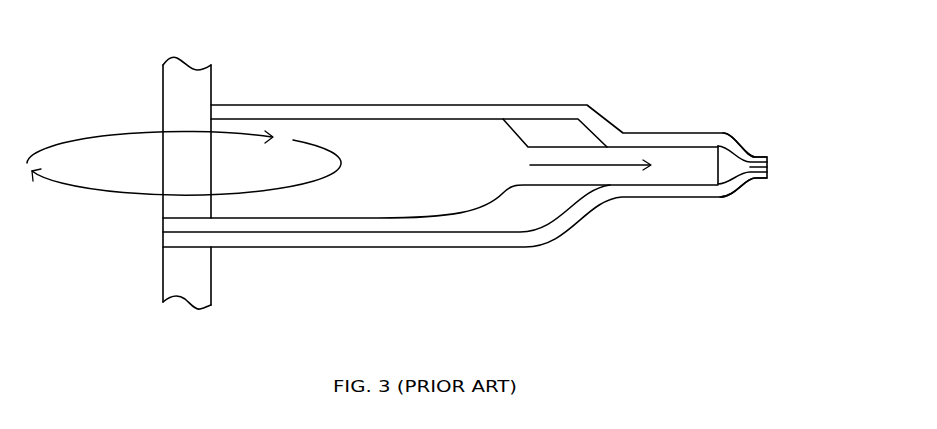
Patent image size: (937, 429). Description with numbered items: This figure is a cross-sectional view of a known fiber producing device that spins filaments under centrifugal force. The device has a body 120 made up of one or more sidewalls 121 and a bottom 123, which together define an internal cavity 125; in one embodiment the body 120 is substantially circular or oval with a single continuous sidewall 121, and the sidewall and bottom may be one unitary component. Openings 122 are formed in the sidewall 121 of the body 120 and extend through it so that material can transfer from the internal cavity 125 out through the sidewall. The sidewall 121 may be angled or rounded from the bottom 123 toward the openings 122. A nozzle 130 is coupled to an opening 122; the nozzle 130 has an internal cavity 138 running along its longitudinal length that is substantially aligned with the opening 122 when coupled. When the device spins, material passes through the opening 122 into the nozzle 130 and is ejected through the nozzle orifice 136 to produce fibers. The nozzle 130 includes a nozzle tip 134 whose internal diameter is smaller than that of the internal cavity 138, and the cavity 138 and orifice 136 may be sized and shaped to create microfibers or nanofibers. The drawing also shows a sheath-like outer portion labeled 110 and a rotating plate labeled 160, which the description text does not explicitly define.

The outer sheath 110 is at (490, 108).
The body 120 is at (465, 260).
The sidewall 121 is at (592, 215).
The opening 122 is at (612, 156).
The bottom 123 is at (357, 240).
The internal cavity 125 is at (393, 140).
The nozzle 130 is at (695, 190).
The nozzle tip 134 is at (752, 152).
The nozzle orifice 136 is at (768, 162).
The internal cavity 138 is at (678, 162).
The rotating plate 160 is at (172, 275).